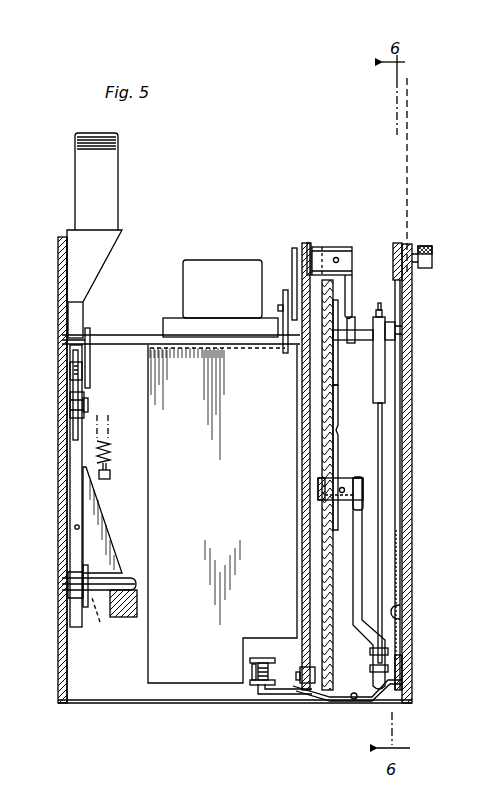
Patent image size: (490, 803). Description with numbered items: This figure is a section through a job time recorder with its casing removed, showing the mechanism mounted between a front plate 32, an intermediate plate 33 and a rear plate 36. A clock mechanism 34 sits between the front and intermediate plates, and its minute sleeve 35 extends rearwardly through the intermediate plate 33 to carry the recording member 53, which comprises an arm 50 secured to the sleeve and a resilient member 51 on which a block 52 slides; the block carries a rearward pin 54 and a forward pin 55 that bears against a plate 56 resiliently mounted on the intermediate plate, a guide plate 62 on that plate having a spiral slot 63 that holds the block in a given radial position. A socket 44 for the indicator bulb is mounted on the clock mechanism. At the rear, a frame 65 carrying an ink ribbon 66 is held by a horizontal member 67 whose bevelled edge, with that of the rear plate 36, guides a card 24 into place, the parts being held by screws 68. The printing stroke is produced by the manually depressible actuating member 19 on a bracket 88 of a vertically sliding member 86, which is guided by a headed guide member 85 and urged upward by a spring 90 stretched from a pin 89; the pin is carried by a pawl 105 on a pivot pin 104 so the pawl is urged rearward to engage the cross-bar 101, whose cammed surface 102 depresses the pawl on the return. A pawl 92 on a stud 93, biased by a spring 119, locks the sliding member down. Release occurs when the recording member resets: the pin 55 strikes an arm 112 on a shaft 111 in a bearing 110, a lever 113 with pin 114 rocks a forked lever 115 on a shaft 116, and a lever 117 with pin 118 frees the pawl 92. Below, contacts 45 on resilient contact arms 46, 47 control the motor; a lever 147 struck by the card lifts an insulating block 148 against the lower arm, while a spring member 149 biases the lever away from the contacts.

The manually depressible actuating member 19 is at (110, 156).
The card 24 is at (408, 179).
The front plate 32 is at (60, 245).
The intermediate plate 33 is at (304, 245).
The clock mechanism 34 is at (172, 684).
The minute sleeve 35 is at (320, 493).
The rear plate 36 is at (412, 433).
The socket 44 is at (196, 260).
The contacts 45 is at (252, 672).
The resilient contact arm 46 is at (263, 658).
The resilient contact arm 47 is at (258, 684).
The arm 50 is at (356, 555).
The resilient member 51 is at (382, 583).
The block 52 is at (385, 379).
The recording member 53 is at (361, 470).
The pin 54 is at (400, 327).
The pin 55 is at (352, 327).
The plate 56 is at (323, 452).
The guide plate 62 is at (334, 418).
The spiral slot 63 is at (334, 386).
The frame 65 is at (410, 660).
The ribbon 66 is at (400, 612).
The horizontal member 67 is at (395, 245).
The screws 68 is at (431, 251).
The headed guide member 85 is at (140, 584).
The vertically sliding member 86 is at (82, 312).
The bracket 88 is at (104, 257).
The pin 89 is at (110, 477).
The spring 90 is at (110, 450).
The pawl 92 is at (76, 428).
The stud 93 is at (90, 408).
The cross-bar 101 is at (138, 603).
The cammed surface 102 is at (108, 621).
The pivot pin 104 is at (66, 531).
The pawl 105 is at (110, 535).
The bearing 110 is at (311, 245).
The shaft 111 is at (324, 258).
The arm 112 is at (350, 273).
The lever 113 is at (293, 270).
The pin 114 is at (278, 308).
The forked lever 115 is at (283, 293).
The shaft 116 is at (143, 335).
The lever 117 is at (92, 364).
The pin 118 is at (70, 379).
The spring 119 is at (70, 410).
The lever 147 is at (348, 707).
The insulating block 148 is at (272, 703).
The spring member 149 is at (330, 703).